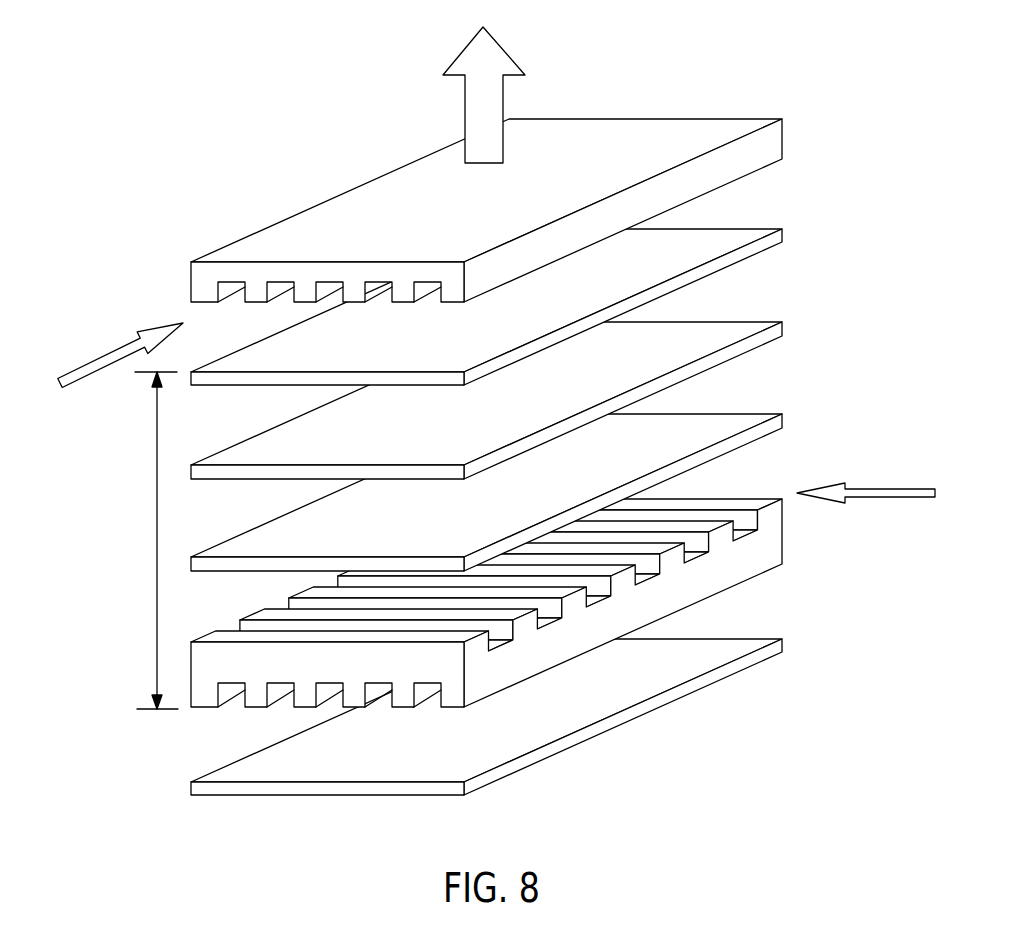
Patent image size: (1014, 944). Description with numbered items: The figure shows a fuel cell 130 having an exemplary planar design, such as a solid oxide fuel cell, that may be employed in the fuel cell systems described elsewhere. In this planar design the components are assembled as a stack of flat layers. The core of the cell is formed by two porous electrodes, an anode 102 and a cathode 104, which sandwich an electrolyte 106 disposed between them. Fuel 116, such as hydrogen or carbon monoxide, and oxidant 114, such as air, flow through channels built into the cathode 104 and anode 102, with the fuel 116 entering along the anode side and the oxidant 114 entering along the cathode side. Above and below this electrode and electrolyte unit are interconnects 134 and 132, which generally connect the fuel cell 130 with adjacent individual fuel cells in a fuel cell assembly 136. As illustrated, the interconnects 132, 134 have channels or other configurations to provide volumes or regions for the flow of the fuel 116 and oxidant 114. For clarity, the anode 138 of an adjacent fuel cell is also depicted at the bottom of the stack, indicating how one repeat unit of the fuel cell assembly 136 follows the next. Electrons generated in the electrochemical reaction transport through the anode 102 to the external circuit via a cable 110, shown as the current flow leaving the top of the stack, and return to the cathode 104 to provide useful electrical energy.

The fuel cell 130 is at (485, 407).
The cable 110 is at (507, 48).
The interconnect 134 is at (775, 138).
The anode 102 is at (780, 233).
The electrolyte 106 is at (780, 327).
The cathode 104 is at (780, 420).
The interconnect 132 is at (512, 603).
The anode of an adjacent fuel cell 138 is at (773, 650).
The fuel 116 is at (105, 347).
The oxidant 114 is at (871, 493).
The fuel cell assembly 136 is at (102, 540).